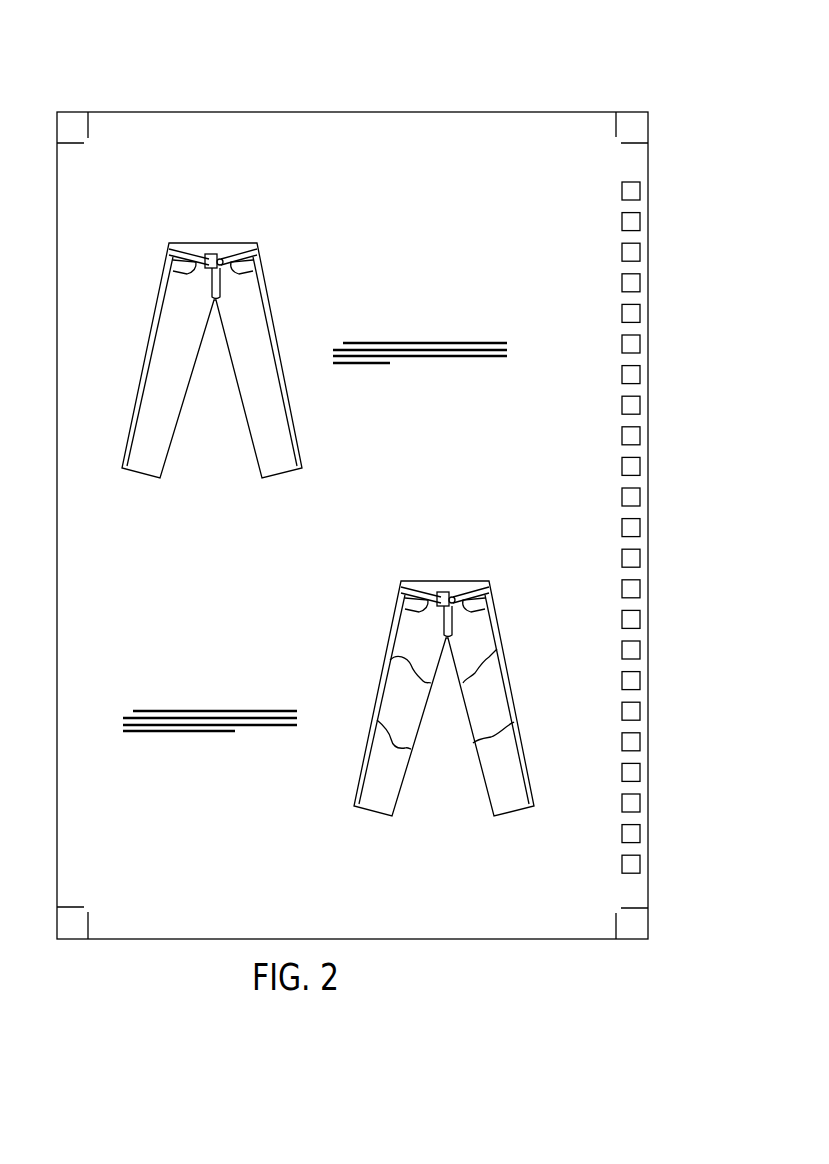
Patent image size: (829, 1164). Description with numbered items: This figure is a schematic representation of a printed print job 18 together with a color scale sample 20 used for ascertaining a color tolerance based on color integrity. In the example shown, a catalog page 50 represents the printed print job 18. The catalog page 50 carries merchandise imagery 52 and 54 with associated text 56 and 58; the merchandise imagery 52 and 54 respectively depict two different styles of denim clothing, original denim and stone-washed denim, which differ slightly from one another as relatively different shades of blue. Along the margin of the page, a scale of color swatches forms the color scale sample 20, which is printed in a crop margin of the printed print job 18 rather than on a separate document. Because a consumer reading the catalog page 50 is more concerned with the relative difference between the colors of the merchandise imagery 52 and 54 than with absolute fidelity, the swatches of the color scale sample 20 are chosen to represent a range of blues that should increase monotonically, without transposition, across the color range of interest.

The print job 18 is at (130, 60).
The color scale sample 20 is at (623, 166).
The catalog page 50 is at (168, 234).
The merchandise imagery 52 is at (234, 245).
The merchandise imagery 54 is at (440, 582).
The associated text 56 is at (397, 377).
The associated text 58 is at (185, 740).